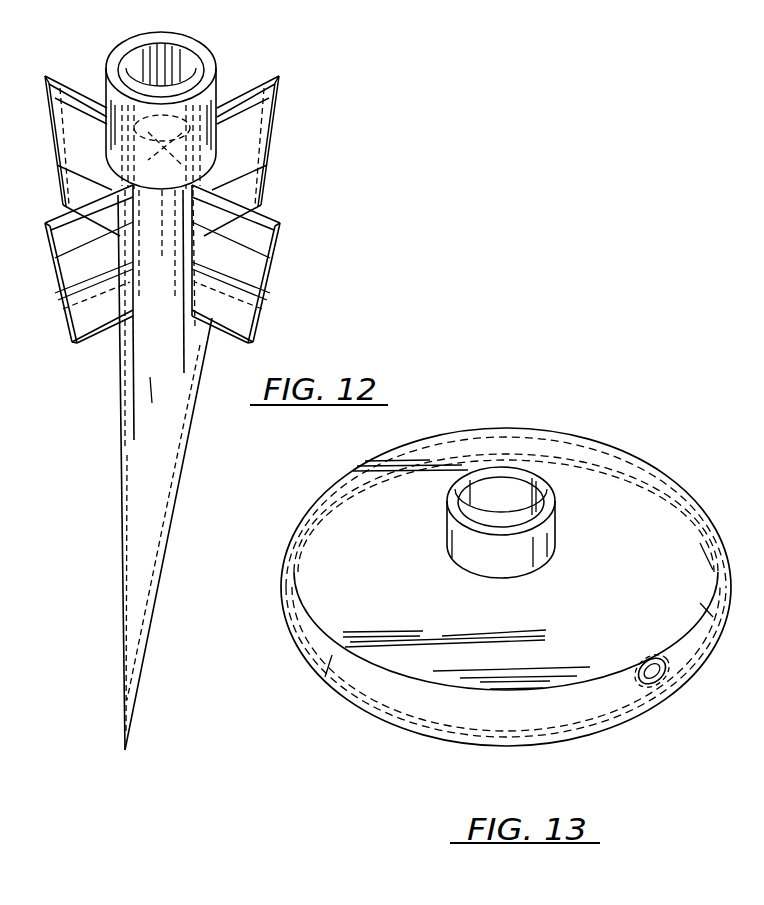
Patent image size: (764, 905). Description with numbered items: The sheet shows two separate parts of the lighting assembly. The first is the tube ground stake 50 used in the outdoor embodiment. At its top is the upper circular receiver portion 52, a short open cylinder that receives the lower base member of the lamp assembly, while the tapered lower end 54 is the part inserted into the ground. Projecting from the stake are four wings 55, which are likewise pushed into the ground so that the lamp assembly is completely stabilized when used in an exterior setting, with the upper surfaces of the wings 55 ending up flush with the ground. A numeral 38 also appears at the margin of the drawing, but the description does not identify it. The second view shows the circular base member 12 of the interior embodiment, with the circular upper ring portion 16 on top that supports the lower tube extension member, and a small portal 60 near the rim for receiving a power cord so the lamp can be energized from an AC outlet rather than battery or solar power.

In FIG. 12, the tube ground stake 50 is at (306, 171).
In FIG. 12, the upper circular receiver portion 52 is at (133, 60).
In FIG. 12, the lower end 54 is at (140, 687).
In FIG. 12, the wings 55 is at (72, 128).
In FIG. 12, the reference element 38 is at (17, 452).
In FIG. 13, the circular base member 12 is at (335, 582).
In FIG. 13, the circular upper ring portion 16 is at (491, 470).
In FIG. 13, the portal 60 is at (663, 695).